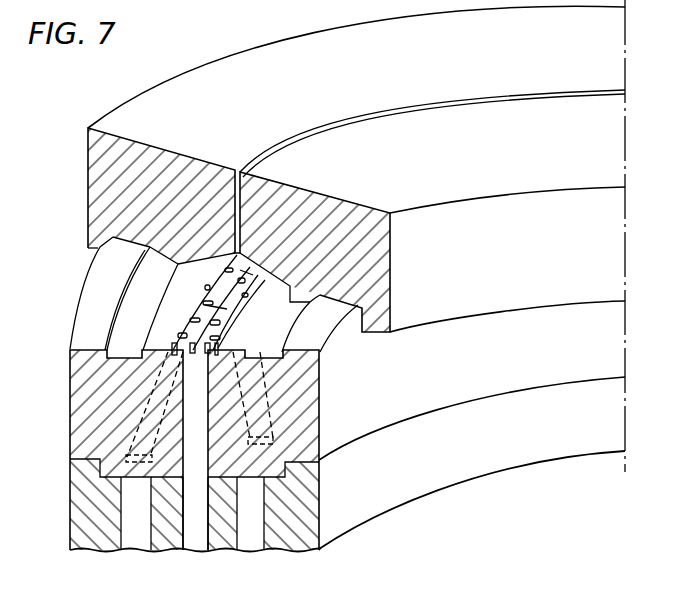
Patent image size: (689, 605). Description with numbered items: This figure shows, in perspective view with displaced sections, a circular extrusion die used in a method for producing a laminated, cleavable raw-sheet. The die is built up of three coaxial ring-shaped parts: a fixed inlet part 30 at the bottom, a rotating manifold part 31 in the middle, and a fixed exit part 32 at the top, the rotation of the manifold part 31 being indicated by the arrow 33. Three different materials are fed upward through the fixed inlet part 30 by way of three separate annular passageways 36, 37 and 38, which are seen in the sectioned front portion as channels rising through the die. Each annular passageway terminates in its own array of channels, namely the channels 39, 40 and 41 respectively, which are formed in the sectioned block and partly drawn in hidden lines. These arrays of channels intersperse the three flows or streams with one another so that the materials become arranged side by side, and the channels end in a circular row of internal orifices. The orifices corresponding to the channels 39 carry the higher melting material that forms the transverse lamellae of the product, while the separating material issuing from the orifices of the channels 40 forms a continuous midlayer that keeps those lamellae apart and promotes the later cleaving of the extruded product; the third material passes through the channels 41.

The fixed inlet part 30 is at (402, 472).
The rotating manifold part 31 is at (515, 355).
The fixed exit part 32 is at (450, 253).
The arrow indicating rotation 33 is at (386, 383).
The annular passageway 36 is at (251, 518).
The annular passageway 37 is at (195, 518).
The annular passageway 38 is at (138, 518).
The array of channels 39 is at (240, 389).
The array of channels 40 is at (193, 423).
The array of channels 41 is at (165, 383).